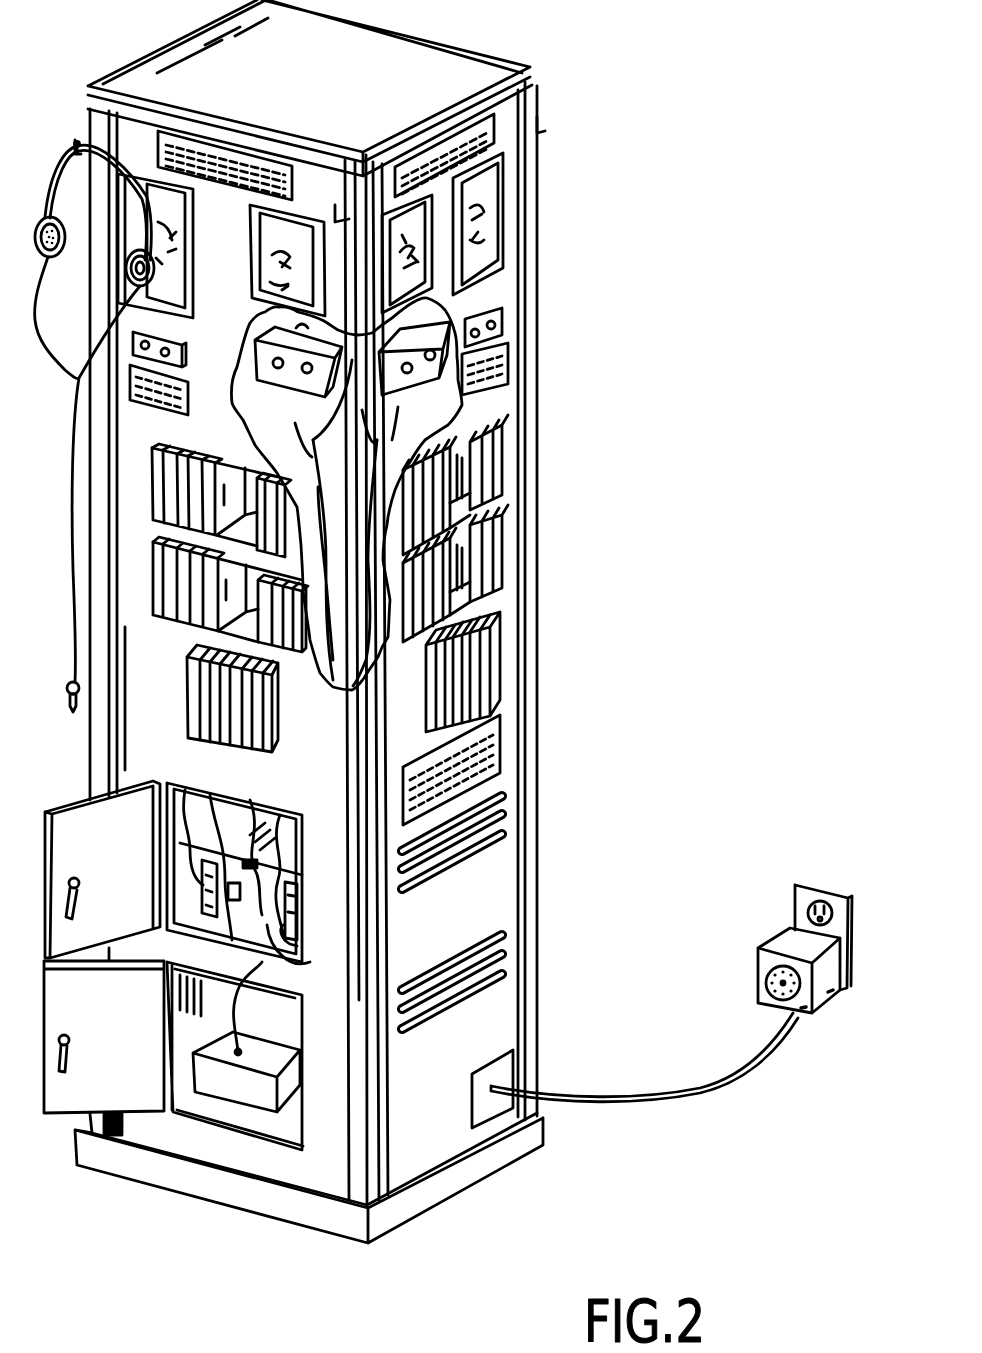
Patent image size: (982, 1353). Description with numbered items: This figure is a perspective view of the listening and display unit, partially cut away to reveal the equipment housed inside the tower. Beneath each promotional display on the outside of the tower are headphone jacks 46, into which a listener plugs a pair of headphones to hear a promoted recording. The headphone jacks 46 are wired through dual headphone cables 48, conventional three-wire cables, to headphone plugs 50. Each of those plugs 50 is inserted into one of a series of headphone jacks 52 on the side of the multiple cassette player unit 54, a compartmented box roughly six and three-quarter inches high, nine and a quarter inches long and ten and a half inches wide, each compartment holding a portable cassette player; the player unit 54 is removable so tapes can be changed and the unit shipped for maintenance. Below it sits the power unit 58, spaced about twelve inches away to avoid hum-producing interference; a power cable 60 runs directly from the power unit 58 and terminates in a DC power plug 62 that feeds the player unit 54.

The headphone jack 46 is at (278, 368).
The dual headphone cable 48 is at (348, 492).
The headphone plug 50 is at (290, 888).
The headphone jack 52 is at (294, 911).
The multiple cassette player unit 54 is at (304, 951).
The power unit 58 is at (258, 1097).
The power cable 60 is at (262, 988).
The DC power plug 62 is at (180, 840).